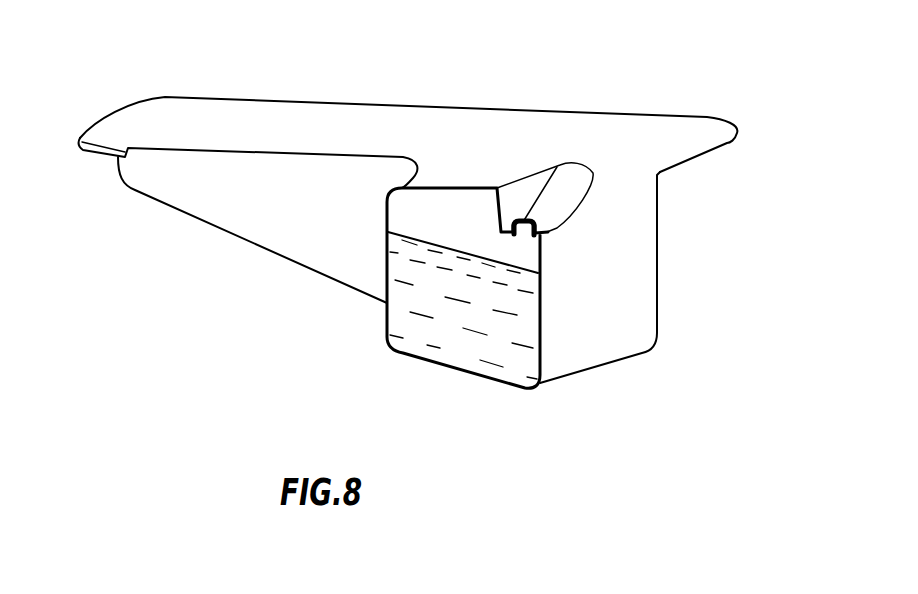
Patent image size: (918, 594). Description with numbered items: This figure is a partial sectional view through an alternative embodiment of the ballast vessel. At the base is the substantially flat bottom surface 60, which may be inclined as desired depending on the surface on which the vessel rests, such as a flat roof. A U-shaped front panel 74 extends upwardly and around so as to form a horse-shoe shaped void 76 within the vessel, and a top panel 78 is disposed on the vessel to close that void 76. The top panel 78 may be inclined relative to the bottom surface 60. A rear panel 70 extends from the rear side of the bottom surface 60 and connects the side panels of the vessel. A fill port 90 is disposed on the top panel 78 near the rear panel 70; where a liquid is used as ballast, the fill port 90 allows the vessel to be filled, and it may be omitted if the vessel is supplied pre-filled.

The bottom surface 60 is at (452, 357).
The rear panel 70 is at (605, 333).
The U-shaped front panel 74 is at (287, 223).
The horse-shoe shaped void 76 is at (507, 352).
The top panel 78 is at (323, 125).
The fill port 90 is at (522, 222).